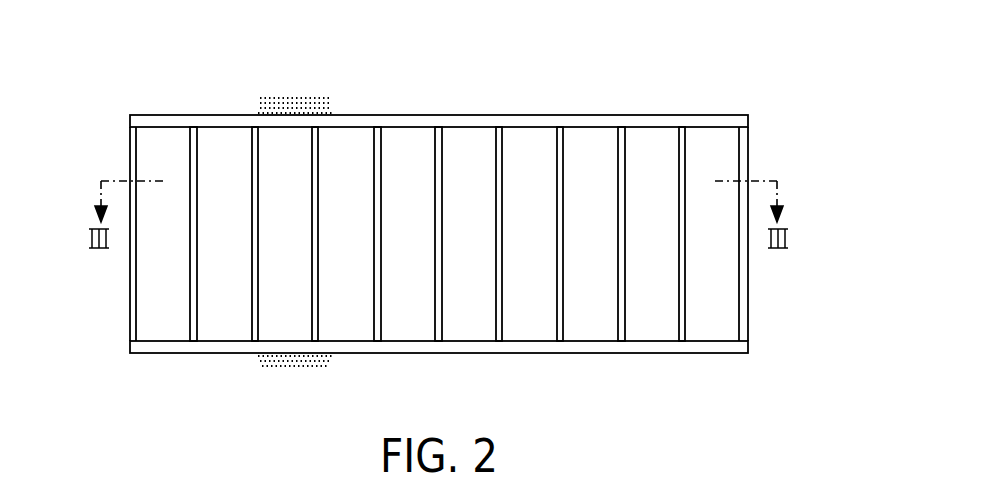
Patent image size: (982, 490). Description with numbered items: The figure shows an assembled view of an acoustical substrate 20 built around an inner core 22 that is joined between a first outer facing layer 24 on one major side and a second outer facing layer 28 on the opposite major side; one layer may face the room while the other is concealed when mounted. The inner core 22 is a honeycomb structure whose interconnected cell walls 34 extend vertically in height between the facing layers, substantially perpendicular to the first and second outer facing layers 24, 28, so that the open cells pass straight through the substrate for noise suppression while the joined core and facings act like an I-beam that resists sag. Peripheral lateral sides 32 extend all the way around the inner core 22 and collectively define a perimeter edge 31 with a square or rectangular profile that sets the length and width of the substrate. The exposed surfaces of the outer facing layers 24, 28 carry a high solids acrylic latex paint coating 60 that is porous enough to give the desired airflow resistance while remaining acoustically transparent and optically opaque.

The acoustical substrate 20 is at (60, 76).
The inner core 22 is at (180, 311).
The first outer facing layer 24 is at (612, 115).
The second outer facing layer 28 is at (606, 354).
The perimeter edge 31 is at (129, 257).
The peripheral lateral sides 32 is at (129, 301).
The cell walls 34 is at (686, 320).
The paint coating 60 is at (311, 96).